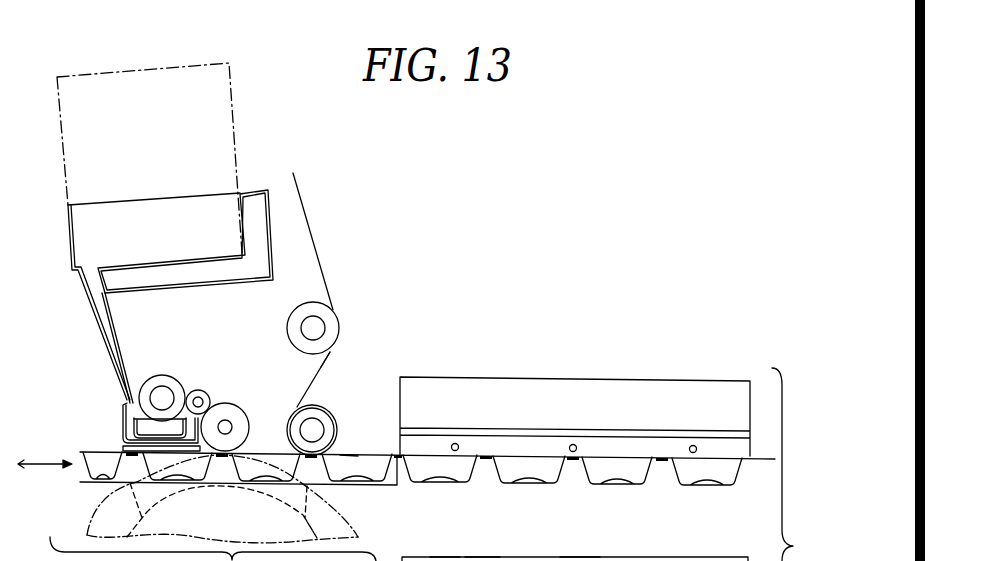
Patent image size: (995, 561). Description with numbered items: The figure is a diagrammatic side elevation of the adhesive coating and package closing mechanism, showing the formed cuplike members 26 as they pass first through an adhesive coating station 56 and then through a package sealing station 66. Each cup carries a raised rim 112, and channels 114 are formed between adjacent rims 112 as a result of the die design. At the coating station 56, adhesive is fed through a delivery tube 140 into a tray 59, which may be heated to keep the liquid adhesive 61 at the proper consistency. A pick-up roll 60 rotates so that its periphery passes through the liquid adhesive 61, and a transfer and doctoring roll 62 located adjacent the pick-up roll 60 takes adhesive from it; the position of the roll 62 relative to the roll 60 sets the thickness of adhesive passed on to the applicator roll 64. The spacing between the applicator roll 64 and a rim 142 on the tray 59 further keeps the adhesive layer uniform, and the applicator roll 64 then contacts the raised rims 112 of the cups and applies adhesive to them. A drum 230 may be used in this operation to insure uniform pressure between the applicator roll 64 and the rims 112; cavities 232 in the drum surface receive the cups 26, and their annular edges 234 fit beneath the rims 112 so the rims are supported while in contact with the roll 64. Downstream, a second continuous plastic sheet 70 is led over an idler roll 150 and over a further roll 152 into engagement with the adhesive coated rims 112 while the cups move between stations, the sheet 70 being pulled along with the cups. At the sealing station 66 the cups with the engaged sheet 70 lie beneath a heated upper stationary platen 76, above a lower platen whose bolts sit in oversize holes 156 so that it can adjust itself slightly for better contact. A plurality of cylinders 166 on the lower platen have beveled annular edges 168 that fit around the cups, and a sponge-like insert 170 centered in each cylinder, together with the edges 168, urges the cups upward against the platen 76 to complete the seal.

The cuplike members 26 is at (97, 463).
The adhesive coating station 56 is at (312, 171).
The tray 59 is at (123, 408).
The pick-up roll 60 is at (135, 405).
The liquid adhesive 61 is at (138, 421).
The transfer and doctoring roll 62 is at (200, 390).
The applicator roll 64 is at (232, 405).
The package sealing station 66 is at (581, 285).
The second continuous plastic sheet 70 is at (321, 367).
The upper stationary platen 76 is at (457, 377).
The raised rims 112 is at (95, 450).
The channels 114 is at (227, 455).
The delivery tube 140 is at (100, 333).
The rim 142 is at (138, 434).
The idler roll 150 is at (287, 333).
The roll 152 is at (323, 407).
The oversize holes 156 is at (660, 560).
The cylinders 166 is at (572, 560).
The beveled annular edge 168 is at (470, 558).
The sponge-like insert 170 is at (442, 558).
The drum 230 is at (352, 525).
The cavities 232 is at (103, 516).
The annular edges 234 is at (105, 497).